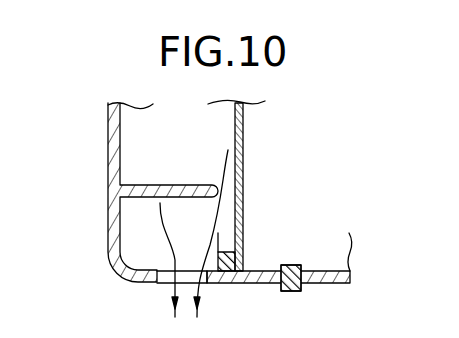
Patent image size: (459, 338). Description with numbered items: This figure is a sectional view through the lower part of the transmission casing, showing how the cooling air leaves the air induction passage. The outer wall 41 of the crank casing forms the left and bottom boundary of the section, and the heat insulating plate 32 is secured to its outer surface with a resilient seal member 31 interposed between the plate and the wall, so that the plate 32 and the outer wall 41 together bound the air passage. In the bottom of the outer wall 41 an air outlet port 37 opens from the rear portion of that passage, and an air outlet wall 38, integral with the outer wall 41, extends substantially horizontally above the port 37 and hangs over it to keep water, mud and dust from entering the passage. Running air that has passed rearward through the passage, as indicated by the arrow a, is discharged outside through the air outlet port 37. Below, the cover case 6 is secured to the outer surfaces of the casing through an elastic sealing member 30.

The outer wall 41 is at (108, 238).
The air outlet wall 38 is at (170, 193).
The heat insulating plate 32 is at (243, 172).
The resilient seal member 31 is at (238, 262).
The air outlet port 37 is at (203, 285).
The cover case 6 is at (305, 285).
The elastic sealing member 30 is at (284, 285).
The arrow a is at (170, 292).